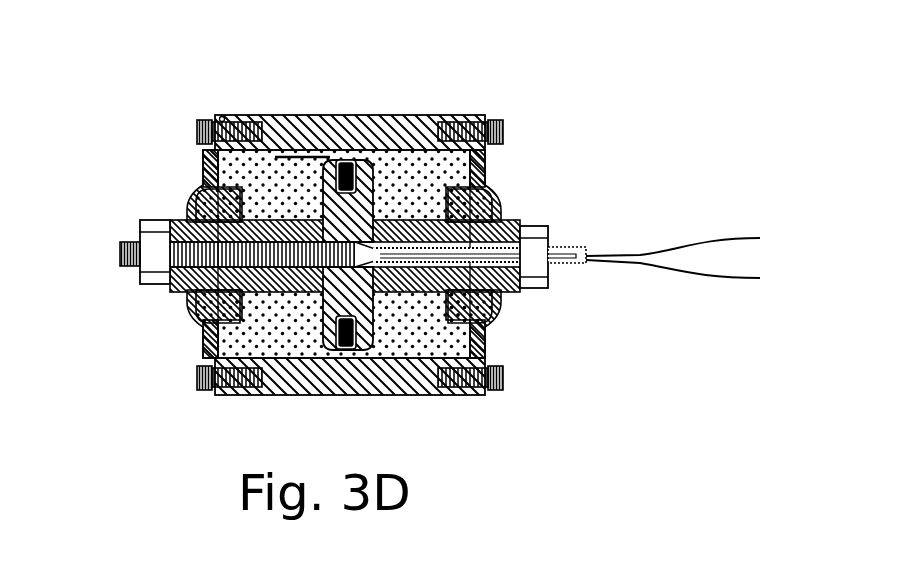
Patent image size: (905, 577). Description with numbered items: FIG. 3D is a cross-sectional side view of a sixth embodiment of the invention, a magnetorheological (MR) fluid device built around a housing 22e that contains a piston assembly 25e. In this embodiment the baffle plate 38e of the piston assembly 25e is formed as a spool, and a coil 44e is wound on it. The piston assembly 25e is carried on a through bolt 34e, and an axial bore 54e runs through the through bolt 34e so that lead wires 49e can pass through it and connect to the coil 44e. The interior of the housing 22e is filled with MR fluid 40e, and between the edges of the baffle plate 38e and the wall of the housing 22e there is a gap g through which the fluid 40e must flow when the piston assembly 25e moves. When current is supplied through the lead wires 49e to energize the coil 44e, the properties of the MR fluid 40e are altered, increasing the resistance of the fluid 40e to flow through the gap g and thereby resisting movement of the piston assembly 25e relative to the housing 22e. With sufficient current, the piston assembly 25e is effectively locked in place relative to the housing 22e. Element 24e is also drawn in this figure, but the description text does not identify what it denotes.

The housing 22e is at (282, 112).
The gap g is at (301, 113).
The coil 44e is at (345, 162).
The baffle plate 38e is at (376, 158).
The through bolt 34e is at (130, 268).
The MR fluid 40e is at (293, 333).
The piston assembly 25e is at (305, 350).
The bellows 24e is at (510, 326).
The axial bore 54e is at (590, 262).
The lead wires 49e is at (697, 278).